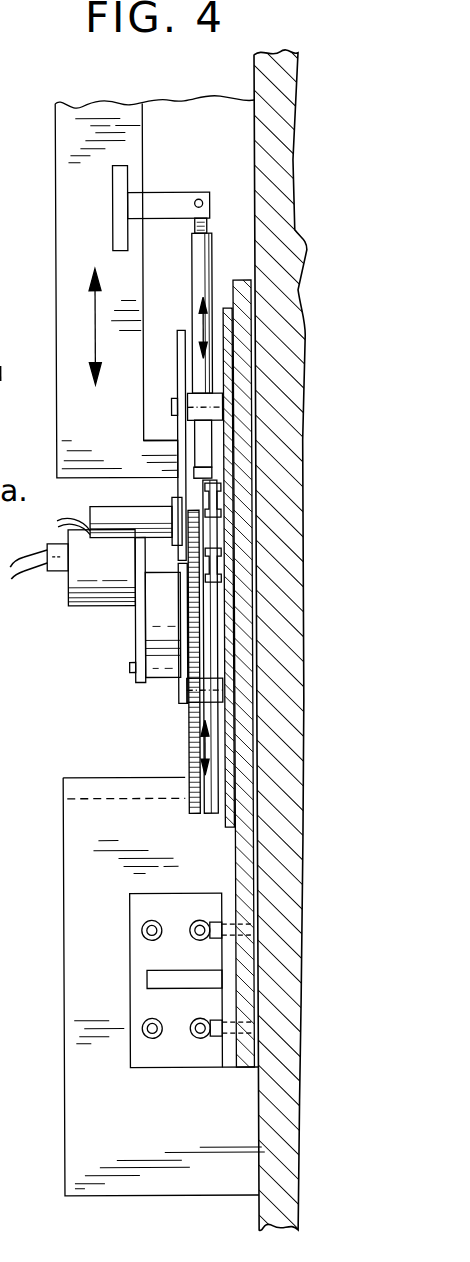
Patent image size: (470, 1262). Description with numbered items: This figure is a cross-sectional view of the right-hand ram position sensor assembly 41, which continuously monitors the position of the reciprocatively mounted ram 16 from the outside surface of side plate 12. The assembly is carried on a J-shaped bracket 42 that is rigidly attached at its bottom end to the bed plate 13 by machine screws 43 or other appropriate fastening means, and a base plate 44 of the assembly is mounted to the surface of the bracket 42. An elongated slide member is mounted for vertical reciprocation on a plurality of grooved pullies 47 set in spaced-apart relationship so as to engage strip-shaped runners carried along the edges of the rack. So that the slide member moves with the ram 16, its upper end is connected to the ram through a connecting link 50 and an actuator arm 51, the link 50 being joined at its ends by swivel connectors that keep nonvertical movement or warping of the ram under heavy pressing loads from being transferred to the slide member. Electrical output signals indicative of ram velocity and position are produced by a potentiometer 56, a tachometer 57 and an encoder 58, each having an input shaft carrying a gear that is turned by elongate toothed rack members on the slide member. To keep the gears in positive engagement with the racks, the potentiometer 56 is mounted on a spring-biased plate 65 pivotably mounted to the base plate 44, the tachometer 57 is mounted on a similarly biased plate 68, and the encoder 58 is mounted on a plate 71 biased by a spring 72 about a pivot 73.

The side plate 12 is at (262, 75).
The bed plate 13 is at (83, 1097).
The ram 16 is at (70, 198).
The ram position sensor assembly 41 is at (0, 760).
The J-shaped bracket 42 is at (245, 862).
The machine screws 43 is at (210, 922).
The base plate 44 is at (222, 821).
The grooved pullies 47 is at (212, 568).
The connecting link 50 is at (197, 267).
The actuator arm 51 is at (166, 200).
The potentiometer 56 is at (160, 625).
The tachometer 57 is at (123, 518).
The encoder 58 is at (97, 593).
The plate 65 is at (181, 705).
The plate 68 is at (138, 686).
The plate 71 is at (183, 432).
The spring 72 is at (12, 409).
The pivot 73 is at (169, 404).